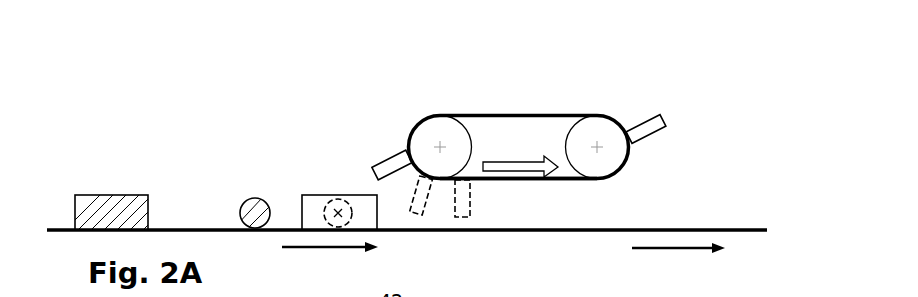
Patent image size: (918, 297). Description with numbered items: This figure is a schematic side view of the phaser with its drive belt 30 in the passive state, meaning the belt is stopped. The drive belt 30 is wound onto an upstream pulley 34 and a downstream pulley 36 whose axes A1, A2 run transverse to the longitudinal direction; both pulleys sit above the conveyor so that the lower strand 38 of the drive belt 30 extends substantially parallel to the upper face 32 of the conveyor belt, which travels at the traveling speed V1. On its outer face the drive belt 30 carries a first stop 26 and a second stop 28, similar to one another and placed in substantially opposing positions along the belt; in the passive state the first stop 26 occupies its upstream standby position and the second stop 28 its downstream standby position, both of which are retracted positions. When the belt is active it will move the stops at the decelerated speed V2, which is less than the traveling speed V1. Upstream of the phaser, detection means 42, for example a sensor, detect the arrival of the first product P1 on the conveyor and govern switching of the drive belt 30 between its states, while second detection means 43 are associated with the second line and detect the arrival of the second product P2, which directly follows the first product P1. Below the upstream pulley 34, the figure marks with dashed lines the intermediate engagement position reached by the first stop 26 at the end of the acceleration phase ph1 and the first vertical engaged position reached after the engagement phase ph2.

The first stop 26 is at (395, 170).
The second stop 28 is at (650, 118).
The drive belt 30 is at (542, 108).
The upper face of the conveyor belt 32 is at (623, 229).
The upstream pulley 34 is at (450, 132).
The downstream pulley 36 is at (613, 155).
The lower strand 38 is at (520, 179).
The detection means 42 is at (352, 207).
The second detection means 43 is at (247, 218).
The first product P1 is at (309, 188).
The second product P2 is at (108, 198).
The axis of the upstream pulley A1 is at (438, 146).
The axis of the downstream pulley A2 is at (597, 145).
The traveling speed V1 is at (503, 258).
The decelerated speed V2 is at (520, 158).
The acceleration phase ph1 is at (401, 194).
The engagement phase ph2 is at (446, 208).